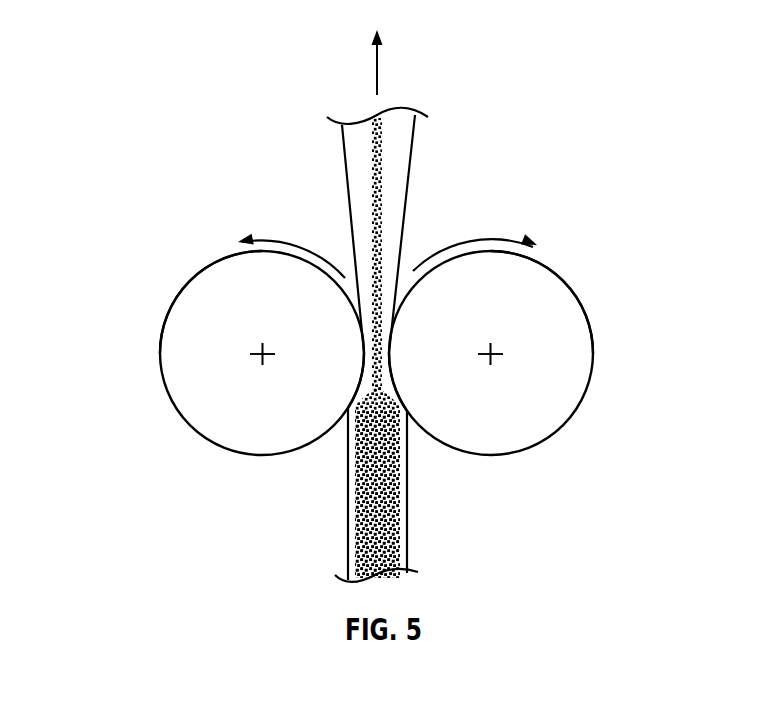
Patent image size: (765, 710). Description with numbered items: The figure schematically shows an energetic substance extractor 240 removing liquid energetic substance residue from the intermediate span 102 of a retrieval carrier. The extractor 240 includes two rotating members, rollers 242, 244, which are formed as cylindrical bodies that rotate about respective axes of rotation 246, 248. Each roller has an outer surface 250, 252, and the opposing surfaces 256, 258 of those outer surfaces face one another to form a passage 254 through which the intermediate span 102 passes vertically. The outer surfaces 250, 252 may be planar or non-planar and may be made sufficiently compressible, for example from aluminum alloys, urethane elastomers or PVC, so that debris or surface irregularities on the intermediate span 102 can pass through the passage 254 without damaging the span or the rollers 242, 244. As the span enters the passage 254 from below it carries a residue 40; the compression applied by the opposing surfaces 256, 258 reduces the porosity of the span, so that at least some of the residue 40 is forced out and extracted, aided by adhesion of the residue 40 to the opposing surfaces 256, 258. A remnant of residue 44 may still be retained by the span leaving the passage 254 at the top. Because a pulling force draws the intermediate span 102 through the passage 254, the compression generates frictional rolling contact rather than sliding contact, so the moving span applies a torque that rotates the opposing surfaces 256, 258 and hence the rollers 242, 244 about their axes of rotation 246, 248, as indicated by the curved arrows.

The energetic substance extractor 240 is at (138, 55).
The remnant of residue 44 is at (380, 167).
The roller 242 is at (186, 279).
The roller 244 is at (552, 269).
The axis of rotation 246 is at (255, 354).
The axis of rotation 248 is at (499, 354).
The outer surface 250 is at (162, 351).
The outer surface 252 is at (595, 353).
The passage 254 is at (375, 390).
The opposing surface 256 is at (356, 379).
The opposing surface 258 is at (393, 349).
The intermediate span 102 is at (407, 486).
The residue 40 is at (396, 519).